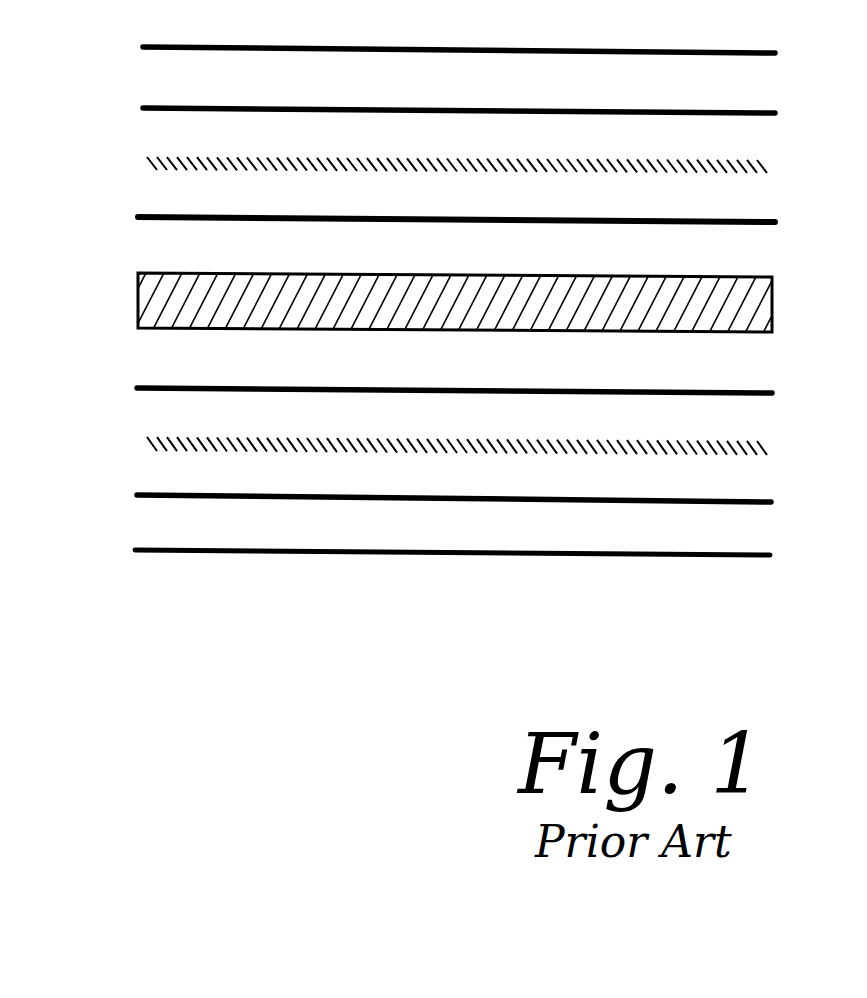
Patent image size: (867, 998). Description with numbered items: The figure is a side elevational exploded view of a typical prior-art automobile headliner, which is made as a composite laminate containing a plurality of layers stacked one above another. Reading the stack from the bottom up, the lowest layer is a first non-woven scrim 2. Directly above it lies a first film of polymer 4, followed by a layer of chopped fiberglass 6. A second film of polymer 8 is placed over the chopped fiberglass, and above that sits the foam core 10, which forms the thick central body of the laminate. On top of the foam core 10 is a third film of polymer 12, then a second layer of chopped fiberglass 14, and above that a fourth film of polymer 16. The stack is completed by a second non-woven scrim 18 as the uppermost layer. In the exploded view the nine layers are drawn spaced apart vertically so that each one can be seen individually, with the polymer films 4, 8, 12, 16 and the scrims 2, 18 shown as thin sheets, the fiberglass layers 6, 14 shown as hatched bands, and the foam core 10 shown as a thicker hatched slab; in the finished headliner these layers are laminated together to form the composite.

The first non-woven scrim 2 is at (137, 550).
The first film of polymer 4 is at (139, 495).
The layer of chopped fiberglass 6 is at (149, 438).
The second film of polymer 8 is at (139, 388).
The foam core 10 is at (140, 273).
The third film of polymer 12 is at (140, 217).
The second layer of chopped fiberglass 14 is at (149, 158).
The fourth film of polymer 16 is at (145, 108).
The second non-woven scrim 18 is at (145, 47).